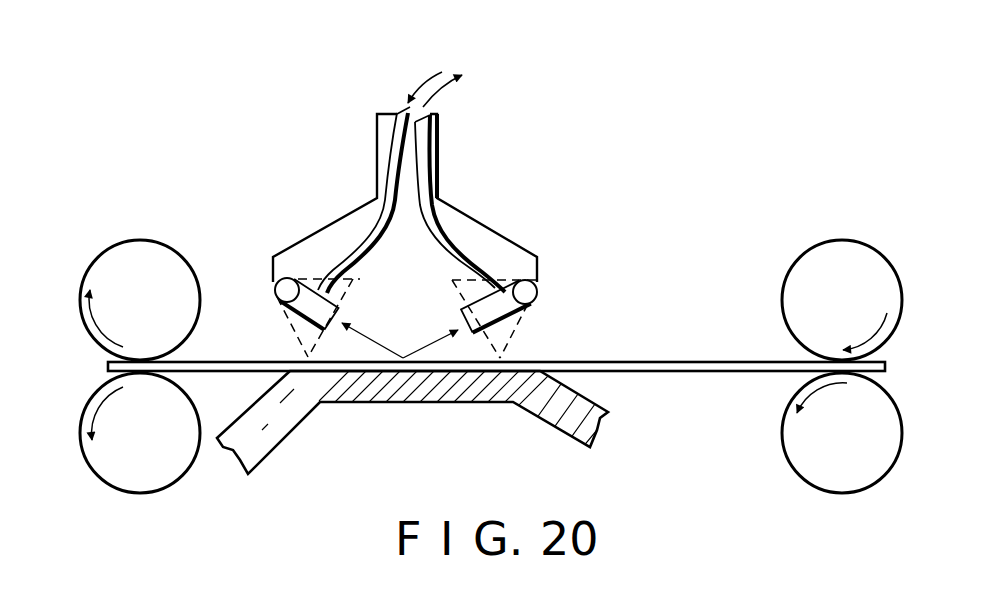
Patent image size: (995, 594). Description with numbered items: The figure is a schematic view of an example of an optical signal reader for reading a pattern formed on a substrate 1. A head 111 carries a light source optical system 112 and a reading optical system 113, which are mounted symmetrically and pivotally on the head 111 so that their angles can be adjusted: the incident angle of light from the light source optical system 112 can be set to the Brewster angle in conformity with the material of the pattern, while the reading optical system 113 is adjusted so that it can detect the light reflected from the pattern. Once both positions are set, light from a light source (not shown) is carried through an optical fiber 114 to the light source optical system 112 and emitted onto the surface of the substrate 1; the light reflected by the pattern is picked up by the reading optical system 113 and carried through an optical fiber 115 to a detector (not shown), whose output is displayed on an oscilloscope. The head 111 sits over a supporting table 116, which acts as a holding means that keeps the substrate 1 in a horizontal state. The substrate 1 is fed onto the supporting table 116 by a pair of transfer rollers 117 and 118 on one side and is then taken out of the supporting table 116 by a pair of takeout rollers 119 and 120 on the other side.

The substrate 1 is at (722, 372).
The head 111 is at (380, 133).
The light source optical system 112 is at (280, 292).
The reading optical system 113 is at (527, 291).
The optical fiber 114 is at (370, 232).
The optical fiber 115 is at (457, 243).
The supporting table 116 is at (455, 403).
The transfer roller 117 is at (845, 478).
The transfer roller 118 is at (847, 250).
The takeout roller 119 is at (160, 478).
The takeout roller 120 is at (158, 263).